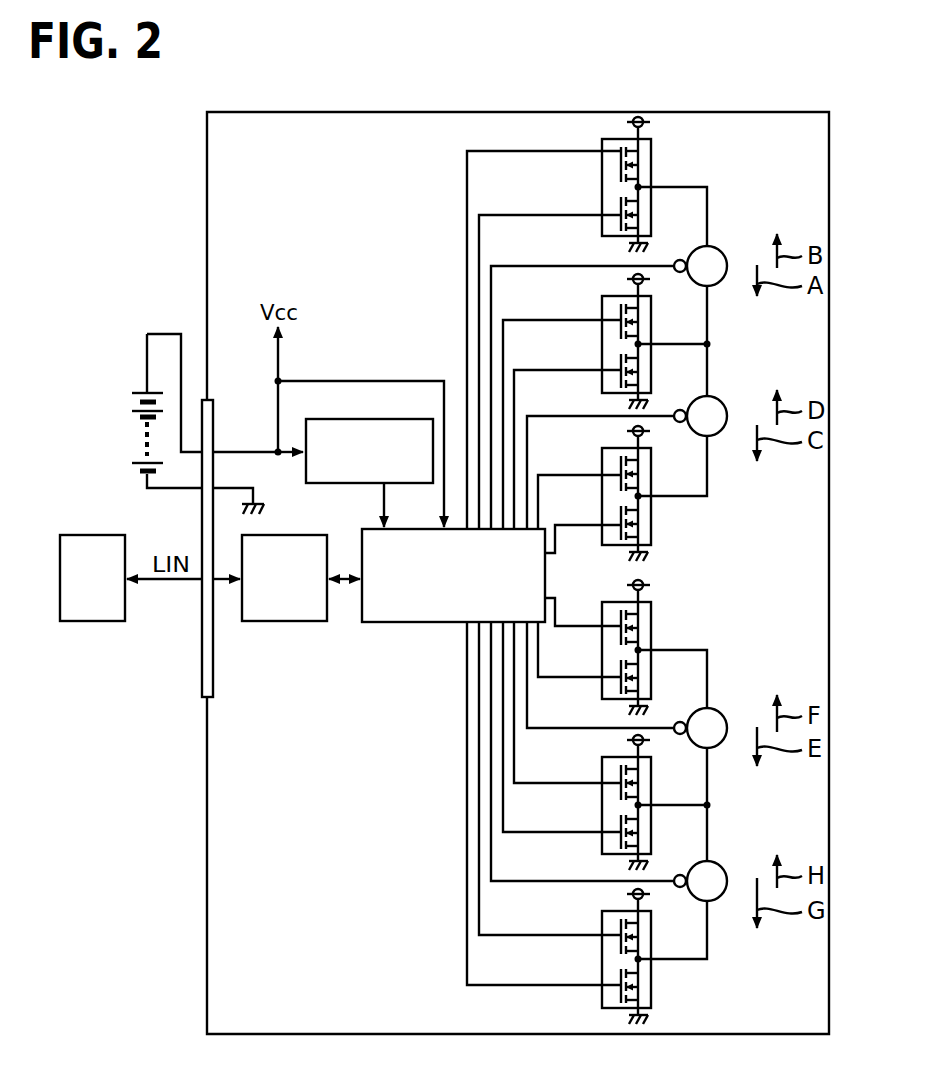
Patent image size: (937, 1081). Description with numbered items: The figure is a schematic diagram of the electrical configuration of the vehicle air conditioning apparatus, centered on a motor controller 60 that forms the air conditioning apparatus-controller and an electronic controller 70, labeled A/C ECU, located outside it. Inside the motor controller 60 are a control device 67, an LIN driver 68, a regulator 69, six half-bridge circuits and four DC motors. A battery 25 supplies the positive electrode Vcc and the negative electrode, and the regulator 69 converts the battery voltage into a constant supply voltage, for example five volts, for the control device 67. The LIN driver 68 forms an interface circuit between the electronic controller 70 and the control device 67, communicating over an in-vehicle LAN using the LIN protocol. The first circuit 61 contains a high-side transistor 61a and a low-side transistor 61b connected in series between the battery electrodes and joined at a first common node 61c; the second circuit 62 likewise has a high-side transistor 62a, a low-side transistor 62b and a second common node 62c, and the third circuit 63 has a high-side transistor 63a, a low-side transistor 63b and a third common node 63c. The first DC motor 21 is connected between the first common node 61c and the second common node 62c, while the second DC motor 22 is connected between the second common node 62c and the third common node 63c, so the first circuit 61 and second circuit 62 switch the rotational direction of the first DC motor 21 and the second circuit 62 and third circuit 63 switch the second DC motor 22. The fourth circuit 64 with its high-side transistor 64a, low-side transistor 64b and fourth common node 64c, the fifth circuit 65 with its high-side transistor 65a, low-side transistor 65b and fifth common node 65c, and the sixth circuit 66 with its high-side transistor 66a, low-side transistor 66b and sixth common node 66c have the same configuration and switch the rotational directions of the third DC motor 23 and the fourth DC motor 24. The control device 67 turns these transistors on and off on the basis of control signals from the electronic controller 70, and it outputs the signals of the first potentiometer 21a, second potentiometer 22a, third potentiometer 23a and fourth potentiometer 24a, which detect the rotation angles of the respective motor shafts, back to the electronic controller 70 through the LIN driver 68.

The motor controller 60 is at (340, 112).
The battery 25 is at (130, 384).
The regulator 69 is at (357, 419).
The control device 67 is at (385, 624).
The LIN driver 68 is at (287, 623).
The electronic controller 70 is at (92, 623).
The first half-bridge circuit 61 is at (661, 186).
The high-side transistor 61a is at (620, 151).
The low-side transistor 61b is at (620, 215).
The first common node 61c is at (641, 190).
The second half-bridge circuit 62 is at (658, 340).
The high-side transistor 62a is at (620, 320).
The low-side transistor 62b is at (620, 370).
The second common node 62c is at (641, 347).
The third half-bridge circuit 63 is at (662, 506).
The high-side transistor 63a is at (620, 475).
The low-side transistor 63b is at (620, 525).
The third common node 63c is at (641, 496).
The fourth half-bridge circuit 64 is at (662, 642).
The high-side transistor 64a is at (620, 626).
The low-side transistor 64b is at (620, 677).
The fourth common node 64c is at (641, 652).
The fifth half-bridge circuit 65 is at (659, 800).
The high-side transistor 65a is at (620, 783).
The low-side transistor 65b is at (620, 832).
The fifth common node 65c is at (641, 808).
The sixth half-bridge circuit 66 is at (661, 966).
The high-side transistor 66a is at (620, 935).
The low-side transistor 66b is at (620, 985).
The sixth common node 66c is at (641, 958).
The first DC motor 21 is at (711, 246).
The first potentiometer 21a is at (674, 266).
The second DC motor 22 is at (711, 396).
The second potentiometer 22a is at (674, 416).
The third DC motor 23 is at (711, 708).
The third potentiometer 23a is at (674, 728).
The fourth DC motor 24 is at (711, 861).
The fourth potentiometer 24a is at (674, 881).